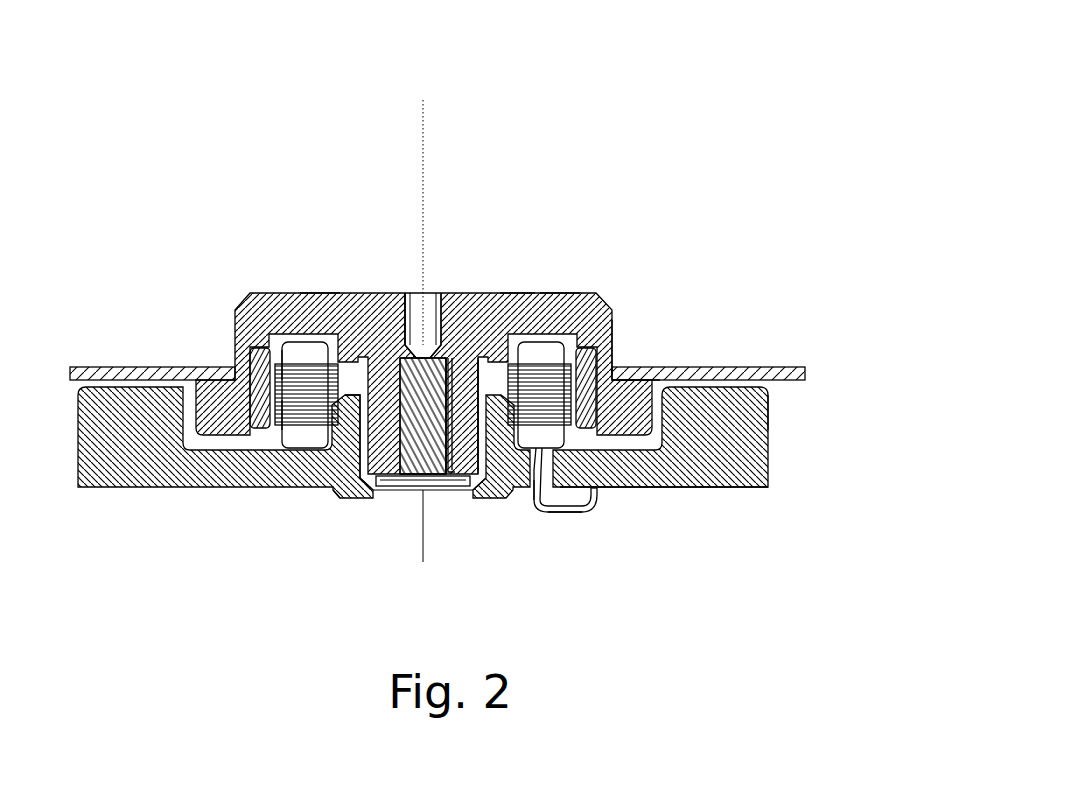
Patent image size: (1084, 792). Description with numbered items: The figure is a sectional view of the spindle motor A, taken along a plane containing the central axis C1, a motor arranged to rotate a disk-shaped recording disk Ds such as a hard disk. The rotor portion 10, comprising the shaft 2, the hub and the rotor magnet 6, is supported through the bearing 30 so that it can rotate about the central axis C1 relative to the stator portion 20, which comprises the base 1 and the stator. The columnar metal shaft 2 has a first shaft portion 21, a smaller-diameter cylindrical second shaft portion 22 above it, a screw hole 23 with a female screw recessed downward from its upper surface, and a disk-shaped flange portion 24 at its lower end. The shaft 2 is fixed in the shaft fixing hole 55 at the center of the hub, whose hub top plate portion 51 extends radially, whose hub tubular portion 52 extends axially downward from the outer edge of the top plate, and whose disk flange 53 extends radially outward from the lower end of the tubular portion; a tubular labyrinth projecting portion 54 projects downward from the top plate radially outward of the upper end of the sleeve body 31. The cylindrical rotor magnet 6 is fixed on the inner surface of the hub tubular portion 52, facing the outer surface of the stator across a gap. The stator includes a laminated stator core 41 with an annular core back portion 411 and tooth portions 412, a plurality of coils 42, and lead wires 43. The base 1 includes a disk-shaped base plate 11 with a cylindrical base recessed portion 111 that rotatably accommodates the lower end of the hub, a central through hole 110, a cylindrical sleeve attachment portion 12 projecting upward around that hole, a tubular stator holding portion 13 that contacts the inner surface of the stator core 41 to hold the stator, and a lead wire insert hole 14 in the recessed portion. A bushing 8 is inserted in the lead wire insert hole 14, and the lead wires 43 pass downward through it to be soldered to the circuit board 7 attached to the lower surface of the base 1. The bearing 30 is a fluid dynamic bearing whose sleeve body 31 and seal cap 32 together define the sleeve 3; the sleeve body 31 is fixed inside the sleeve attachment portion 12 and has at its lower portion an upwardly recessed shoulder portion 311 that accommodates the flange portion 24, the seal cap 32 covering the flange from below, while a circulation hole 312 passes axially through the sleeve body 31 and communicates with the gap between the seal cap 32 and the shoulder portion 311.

The base 1 is at (770, 450).
The shaft 2 is at (423, 470).
The sleeve 3 is at (466, 350).
The rotor magnet 6 is at (262, 348).
The circuit board 7 is at (680, 488).
The bushing 8 is at (543, 493).
The rotor portion 10 is at (596, 299).
The base plate 11 is at (100, 467).
The sleeve attachment portion 12 is at (492, 485).
The stator holding portion 13 is at (517, 294).
The lead wire insert hole 14 is at (600, 489).
The stator portion 20 is at (778, 410).
The first shaft portion 21 is at (440, 478).
The second shaft portion 22 is at (404, 296).
The screw hole 23 is at (412, 292).
The flange portion 24 is at (447, 488).
The bearing 30 is at (406, 493).
The sleeve body 31 is at (396, 482).
The seal cap 32 is at (456, 480).
The stator core 41 is at (293, 538).
The coils 42 is at (245, 308).
The lead wires 43 is at (572, 512).
The hub top plate portion 51 is at (543, 296).
The hub tubular portion 52 is at (614, 360).
The disk flange 53 is at (640, 376).
The labyrinth projecting portion 54 is at (318, 294).
The shaft fixing hole 55 is at (452, 350).
The through hole 110 is at (358, 480).
The base recessed portion 111 is at (180, 375).
The shoulder portion 311 is at (383, 486).
The circulation hole 312 is at (478, 470).
The core back portion 411 is at (299, 413).
The tooth portions 412 is at (293, 348).
The motor A is at (658, 138).
The central axis C1 is at (426, 120).
The recording disk Ds is at (742, 374).